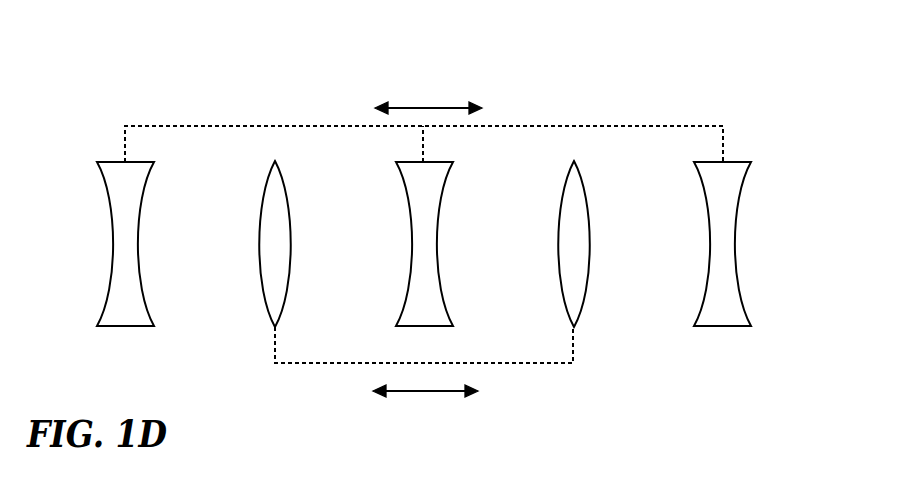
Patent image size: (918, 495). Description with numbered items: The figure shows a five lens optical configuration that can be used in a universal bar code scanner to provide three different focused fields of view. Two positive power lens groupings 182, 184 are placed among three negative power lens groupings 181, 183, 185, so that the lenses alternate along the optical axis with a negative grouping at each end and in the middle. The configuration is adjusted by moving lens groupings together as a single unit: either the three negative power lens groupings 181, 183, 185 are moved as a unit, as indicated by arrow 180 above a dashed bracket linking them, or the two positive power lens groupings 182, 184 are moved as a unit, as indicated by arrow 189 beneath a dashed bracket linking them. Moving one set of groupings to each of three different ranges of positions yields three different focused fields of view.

The arrow 180 is at (465, 105).
The negative power lens grouping 181 is at (112, 212).
The positive power lens grouping 182 is at (262, 228).
The negative power lens grouping 183 is at (410, 228).
The positive power lens grouping 184 is at (560, 228).
The negative power lens grouping 185 is at (710, 228).
The arrow 189 is at (430, 392).